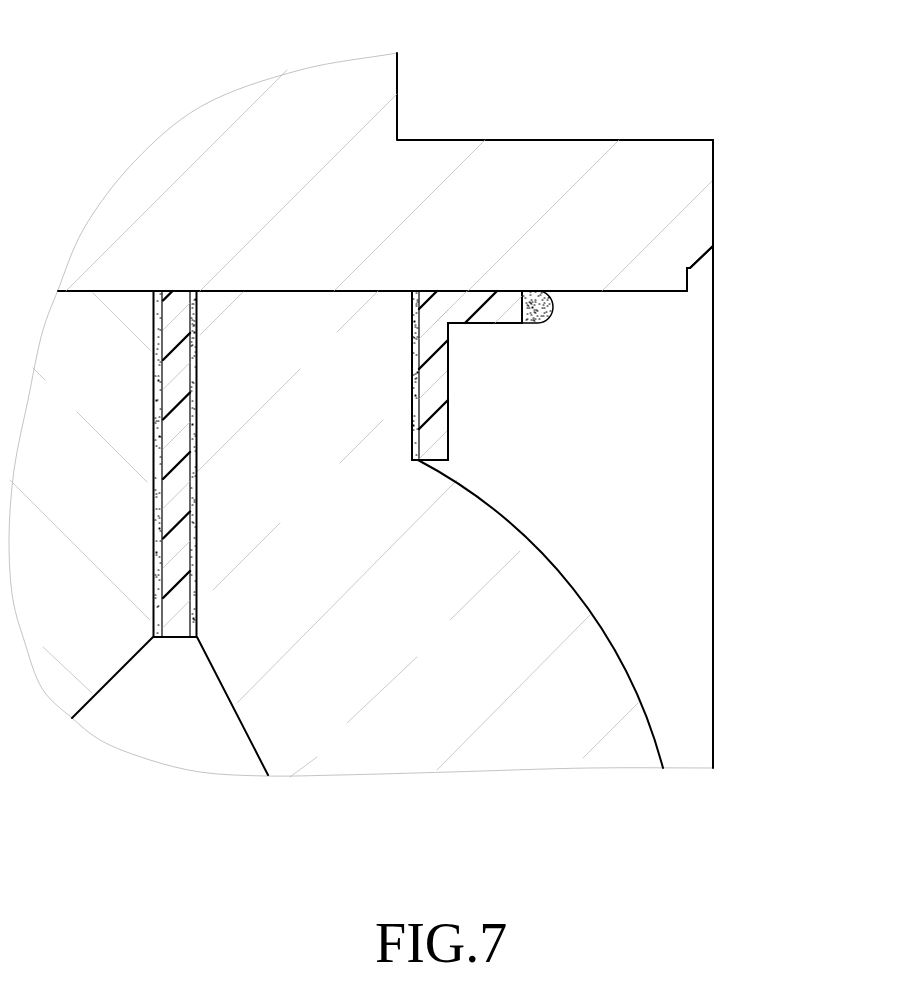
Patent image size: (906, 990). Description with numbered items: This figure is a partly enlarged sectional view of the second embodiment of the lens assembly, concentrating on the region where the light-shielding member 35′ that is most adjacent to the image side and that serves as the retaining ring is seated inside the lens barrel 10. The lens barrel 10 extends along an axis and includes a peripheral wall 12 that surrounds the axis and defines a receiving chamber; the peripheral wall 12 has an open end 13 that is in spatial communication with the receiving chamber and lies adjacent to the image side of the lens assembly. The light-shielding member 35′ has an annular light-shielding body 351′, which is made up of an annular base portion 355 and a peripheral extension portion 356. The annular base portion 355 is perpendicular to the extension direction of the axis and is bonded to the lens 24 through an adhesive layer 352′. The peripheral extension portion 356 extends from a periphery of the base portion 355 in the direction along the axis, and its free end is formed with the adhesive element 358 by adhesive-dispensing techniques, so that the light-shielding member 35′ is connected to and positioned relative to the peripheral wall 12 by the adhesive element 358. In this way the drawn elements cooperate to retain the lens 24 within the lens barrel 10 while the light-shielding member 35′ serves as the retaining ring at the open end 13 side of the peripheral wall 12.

The lens barrel 10 is at (550, 148).
The peripheral wall 12 is at (646, 157).
The open end 13 is at (703, 548).
The lens 24 is at (470, 733).
The light-shielding member 35′ is at (455, 393).
The annular light-shielding body 351′ is at (448, 363).
The adhesive layer 352′ is at (419, 450).
The annular base portion 355 is at (440, 432).
The peripheral extension portion 356 is at (476, 310).
The adhesive element 358 is at (545, 312).